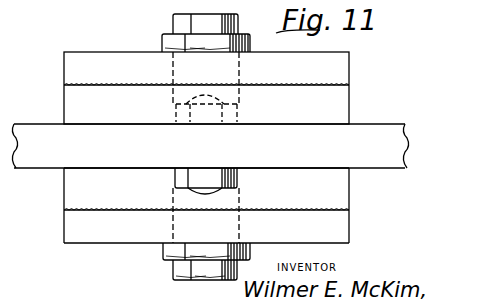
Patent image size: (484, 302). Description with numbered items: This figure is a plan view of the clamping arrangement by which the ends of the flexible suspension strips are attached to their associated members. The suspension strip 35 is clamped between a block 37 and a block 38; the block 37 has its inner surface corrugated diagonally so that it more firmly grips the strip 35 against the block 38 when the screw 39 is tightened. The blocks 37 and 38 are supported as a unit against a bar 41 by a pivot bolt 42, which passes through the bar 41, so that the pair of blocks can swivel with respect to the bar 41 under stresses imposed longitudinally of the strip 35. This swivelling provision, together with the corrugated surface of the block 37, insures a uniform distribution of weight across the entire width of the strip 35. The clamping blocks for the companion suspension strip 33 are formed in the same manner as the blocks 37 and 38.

The suspension strip 33 is at (72, 85).
The suspension strip 35 is at (77, 209).
The block 37 is at (342, 228).
The block 38 is at (342, 190).
The screw 39 is at (165, 254).
The bar 41 is at (365, 142).
The pivot bolt 42 is at (173, 274).